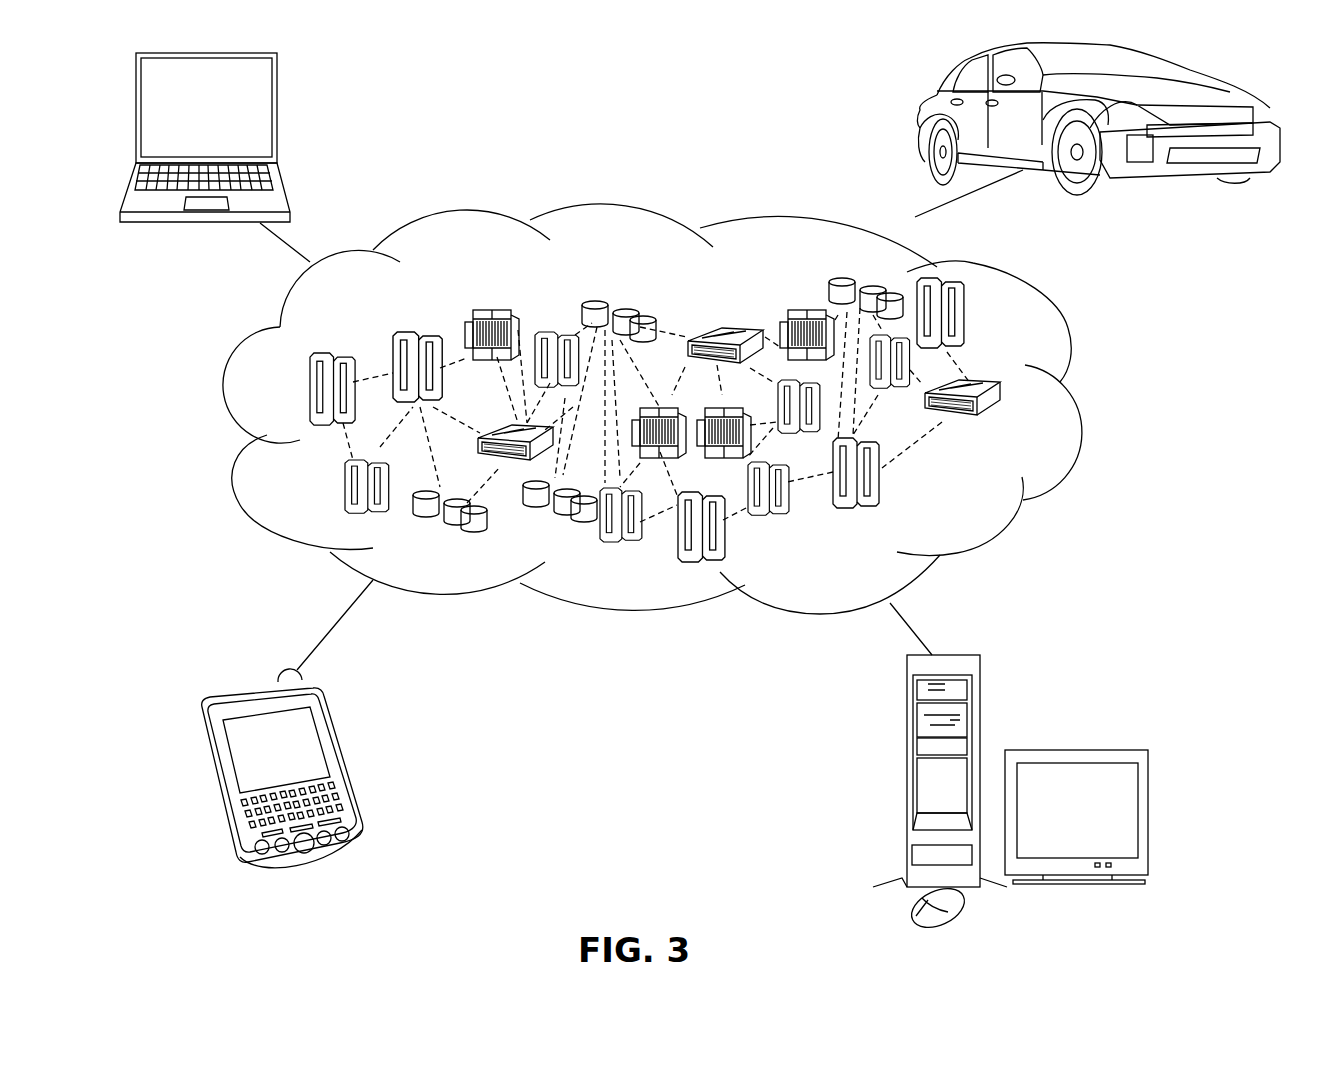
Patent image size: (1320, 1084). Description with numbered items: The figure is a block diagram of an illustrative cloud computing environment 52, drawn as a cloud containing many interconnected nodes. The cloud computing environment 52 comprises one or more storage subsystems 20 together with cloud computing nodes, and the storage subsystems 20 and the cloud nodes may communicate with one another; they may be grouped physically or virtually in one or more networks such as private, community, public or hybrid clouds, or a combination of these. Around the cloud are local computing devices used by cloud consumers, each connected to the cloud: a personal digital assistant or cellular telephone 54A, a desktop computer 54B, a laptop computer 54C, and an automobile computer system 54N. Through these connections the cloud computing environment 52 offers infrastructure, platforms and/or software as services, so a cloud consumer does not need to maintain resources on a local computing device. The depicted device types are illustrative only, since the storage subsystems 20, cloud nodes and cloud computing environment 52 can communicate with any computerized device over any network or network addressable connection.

The storage subsystem 20 is at (986, 508).
The cloud computing environment 52 is at (1076, 400).
The personal digital assistant (PDA) or cellular telephone 54A is at (330, 730).
The desktop computer 54B is at (905, 715).
The laptop computer 54C is at (278, 92).
The automobile computer system 54N is at (918, 113).